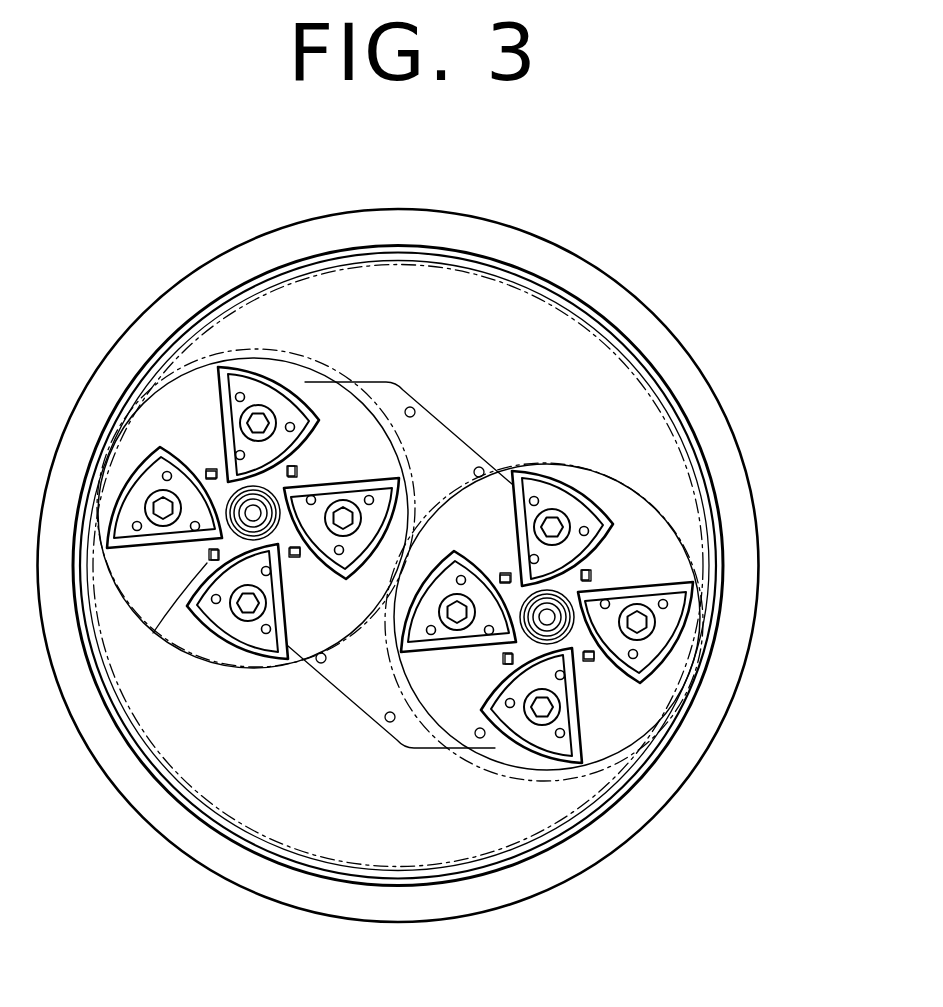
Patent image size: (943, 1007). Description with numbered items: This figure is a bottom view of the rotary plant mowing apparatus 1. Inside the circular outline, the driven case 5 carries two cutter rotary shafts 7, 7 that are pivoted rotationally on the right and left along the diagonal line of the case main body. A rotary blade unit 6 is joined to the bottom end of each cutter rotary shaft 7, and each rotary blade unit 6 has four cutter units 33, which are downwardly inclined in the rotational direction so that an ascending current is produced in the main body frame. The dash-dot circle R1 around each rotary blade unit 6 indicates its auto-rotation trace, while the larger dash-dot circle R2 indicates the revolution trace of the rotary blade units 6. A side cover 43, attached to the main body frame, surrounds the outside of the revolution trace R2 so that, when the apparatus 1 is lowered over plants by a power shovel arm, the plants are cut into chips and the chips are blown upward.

The plant mowing apparatus 1 is at (616, 226).
The driven case 5 is at (456, 455).
The rotary blade unit 6 is at (179, 419).
The cutter rotary shaft 7 is at (615, 484).
The cutter unit 33 is at (258, 642).
The side cover 43 is at (707, 453).
The auto-rotation trace R1 is at (268, 356).
The revolution trace R2 is at (512, 283).